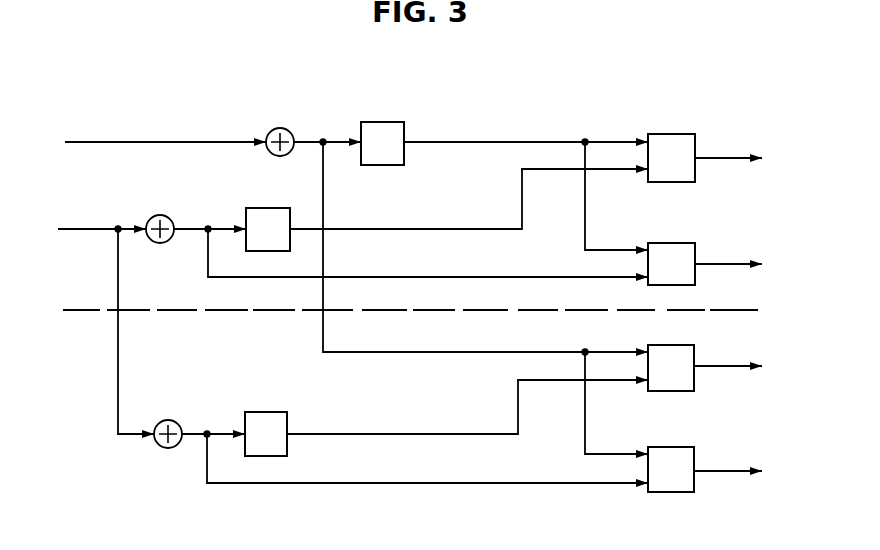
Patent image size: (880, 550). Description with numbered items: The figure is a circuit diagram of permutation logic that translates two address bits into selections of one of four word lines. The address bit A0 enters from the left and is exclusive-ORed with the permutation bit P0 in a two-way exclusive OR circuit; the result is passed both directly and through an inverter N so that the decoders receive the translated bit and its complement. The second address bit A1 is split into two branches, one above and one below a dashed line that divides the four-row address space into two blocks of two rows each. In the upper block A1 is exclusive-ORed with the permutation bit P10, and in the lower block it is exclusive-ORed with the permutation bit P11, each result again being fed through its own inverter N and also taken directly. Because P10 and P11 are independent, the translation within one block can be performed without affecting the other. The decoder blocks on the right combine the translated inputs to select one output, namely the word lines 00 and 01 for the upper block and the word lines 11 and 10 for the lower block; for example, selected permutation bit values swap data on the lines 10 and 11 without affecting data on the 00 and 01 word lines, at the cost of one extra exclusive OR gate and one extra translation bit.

The address bit A0 is at (165, 128).
The address bit A1 is at (106, 318).
The permutation bit P0 is at (280, 128).
The permutation bit P10 is at (160, 215).
The permutation bit P11 is at (168, 420).
The inverter N is at (324, 289).
The word line 00 is at (705, 154).
The word line 01 is at (705, 259).
The word line 11 is at (705, 364).
The word line 10 is at (705, 467).